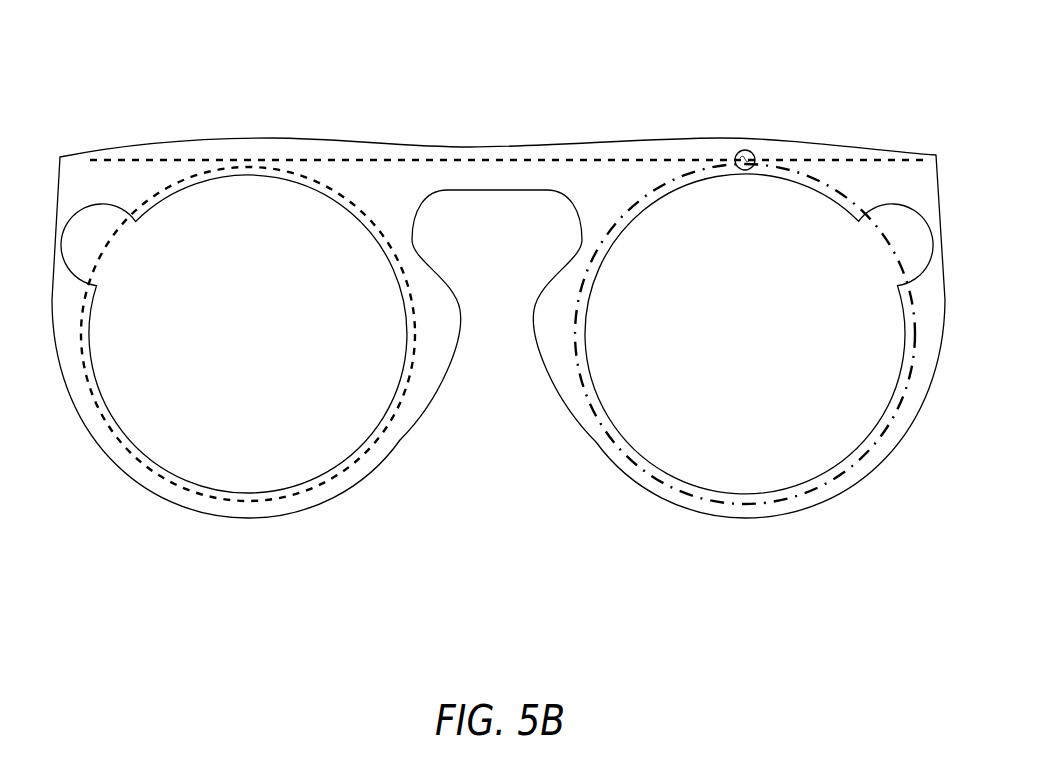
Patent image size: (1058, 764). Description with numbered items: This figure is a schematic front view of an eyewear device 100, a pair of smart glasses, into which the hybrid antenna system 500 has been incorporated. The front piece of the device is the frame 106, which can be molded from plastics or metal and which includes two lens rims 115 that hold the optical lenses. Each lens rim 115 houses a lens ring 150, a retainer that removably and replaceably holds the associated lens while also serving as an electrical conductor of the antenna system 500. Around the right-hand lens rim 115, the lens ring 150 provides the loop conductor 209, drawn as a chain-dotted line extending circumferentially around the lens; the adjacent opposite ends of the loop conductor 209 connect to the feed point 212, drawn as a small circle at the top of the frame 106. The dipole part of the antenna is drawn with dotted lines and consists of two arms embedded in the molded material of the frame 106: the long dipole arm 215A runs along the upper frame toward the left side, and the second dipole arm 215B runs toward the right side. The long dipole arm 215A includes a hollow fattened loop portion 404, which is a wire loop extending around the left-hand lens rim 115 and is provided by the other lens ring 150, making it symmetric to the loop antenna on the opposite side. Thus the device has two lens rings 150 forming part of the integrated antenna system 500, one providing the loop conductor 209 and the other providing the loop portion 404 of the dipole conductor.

The eyewear device 100 is at (306, 86).
The frame 106 is at (470, 178).
The lens rim 115 is at (175, 497).
The lens ring 150 is at (505, 358).
The loop conductor 209 is at (598, 440).
The feed point 212 is at (746, 150).
The long dipole arm 215A is at (166, 158).
The dipole arm 215B is at (830, 150).
The loop portion 404 is at (283, 507).
The hybrid antenna system 500 is at (787, 548).